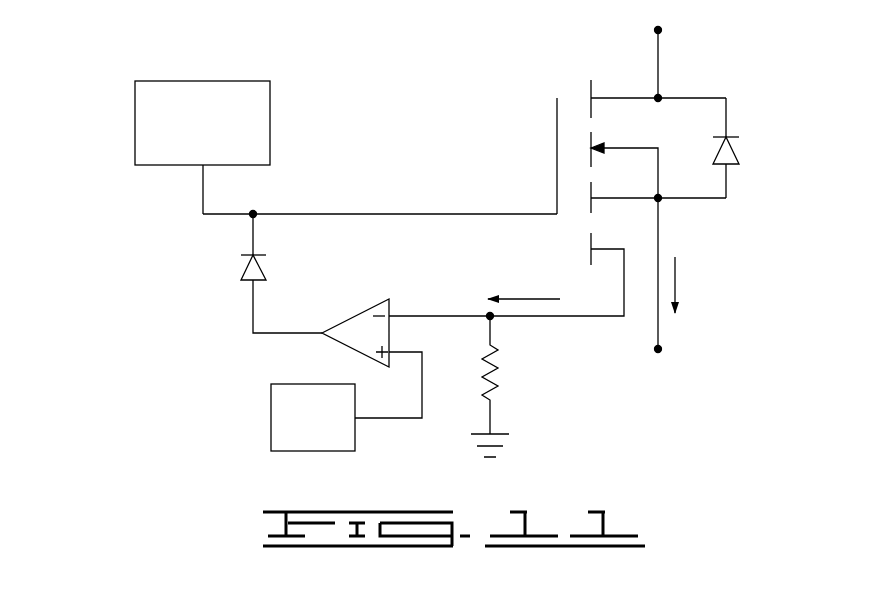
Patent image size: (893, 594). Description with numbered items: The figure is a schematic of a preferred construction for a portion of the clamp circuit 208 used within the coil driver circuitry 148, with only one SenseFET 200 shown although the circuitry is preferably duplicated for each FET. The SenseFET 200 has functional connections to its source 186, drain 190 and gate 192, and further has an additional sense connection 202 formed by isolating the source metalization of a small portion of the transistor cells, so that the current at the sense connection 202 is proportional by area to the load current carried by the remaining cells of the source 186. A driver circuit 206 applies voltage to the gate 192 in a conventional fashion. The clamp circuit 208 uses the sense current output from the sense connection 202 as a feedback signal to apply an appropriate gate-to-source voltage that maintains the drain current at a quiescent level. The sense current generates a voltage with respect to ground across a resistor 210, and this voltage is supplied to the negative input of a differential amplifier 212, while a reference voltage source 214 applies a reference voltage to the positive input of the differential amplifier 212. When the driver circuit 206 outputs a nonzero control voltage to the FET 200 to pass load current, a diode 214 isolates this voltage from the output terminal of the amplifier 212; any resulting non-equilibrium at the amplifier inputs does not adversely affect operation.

The coil driver circuitry 148 is at (313, 53).
The driver circuit 206 is at (165, 85).
The gate 192 is at (424, 207).
The drain 190 is at (660, 70).
The SenseFET 200 is at (751, 187).
The source 186 is at (660, 217).
The sense connection 202 is at (537, 318).
The resistor 210 is at (495, 372).
The differential amplifier 212 is at (362, 320).
The reference voltage source 214 is at (242, 267).
The clamp circuit 208 is at (226, 366).